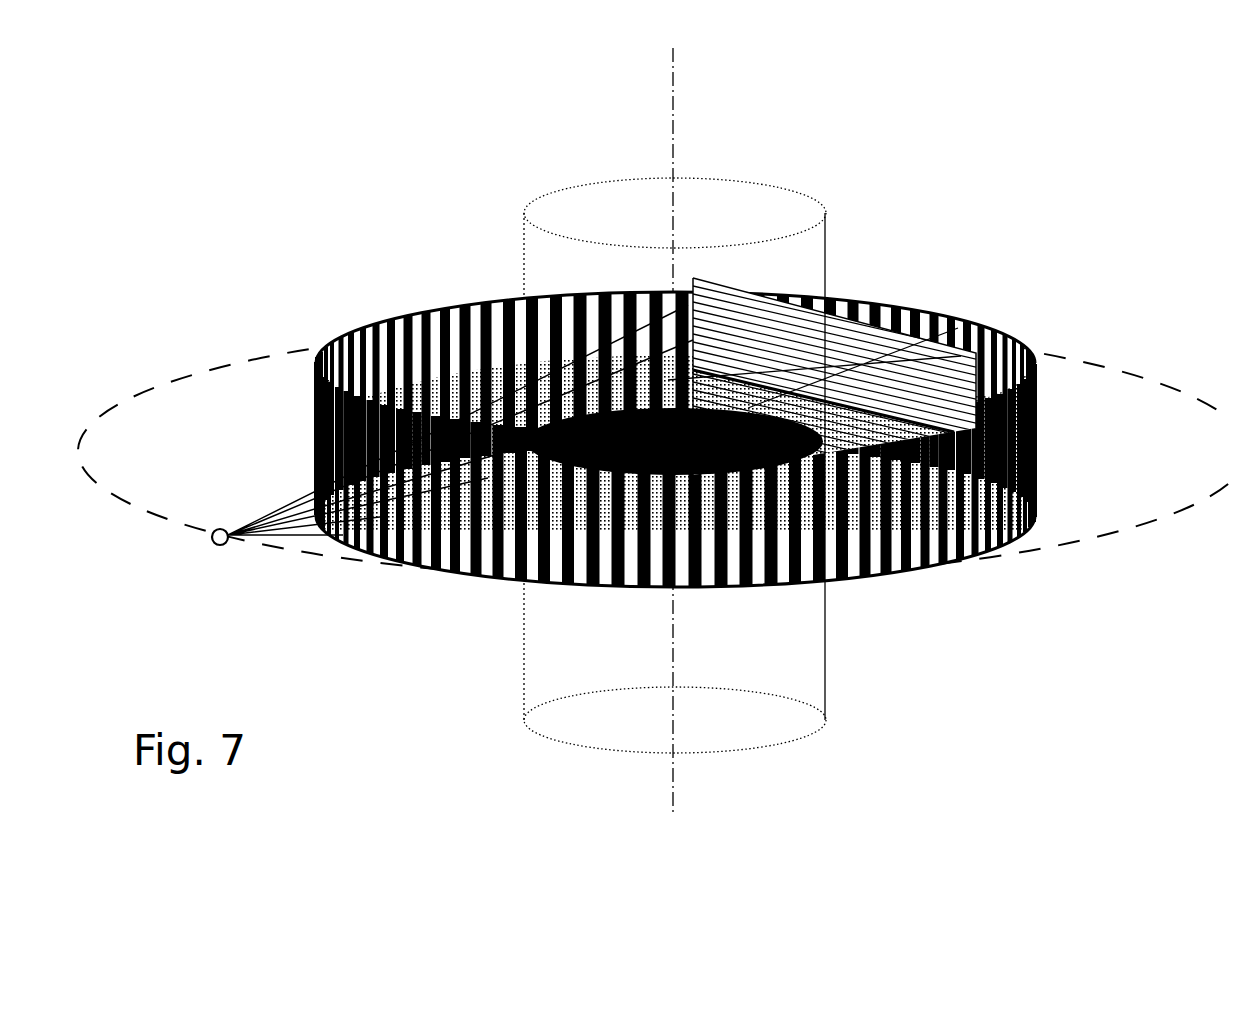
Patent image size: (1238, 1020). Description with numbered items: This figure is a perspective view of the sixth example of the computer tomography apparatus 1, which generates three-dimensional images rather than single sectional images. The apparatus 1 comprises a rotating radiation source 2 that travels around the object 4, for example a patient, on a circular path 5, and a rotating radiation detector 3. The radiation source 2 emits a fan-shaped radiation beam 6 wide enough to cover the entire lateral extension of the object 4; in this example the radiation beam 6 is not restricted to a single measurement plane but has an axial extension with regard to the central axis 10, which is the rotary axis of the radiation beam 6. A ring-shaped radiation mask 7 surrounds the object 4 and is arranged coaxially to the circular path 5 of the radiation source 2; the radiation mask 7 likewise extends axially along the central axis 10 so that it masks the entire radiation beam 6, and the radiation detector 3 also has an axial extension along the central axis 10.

The computer tomography apparatus 1 is at (226, 170).
The radiation source 2 is at (204, 538).
The radiation detector 3 is at (858, 333).
The object 4 is at (514, 226).
The circular path 5 is at (160, 358).
The radiation beam 6 is at (278, 488).
The radiation mask 7 is at (306, 406).
The central axis 10 is at (661, 108).